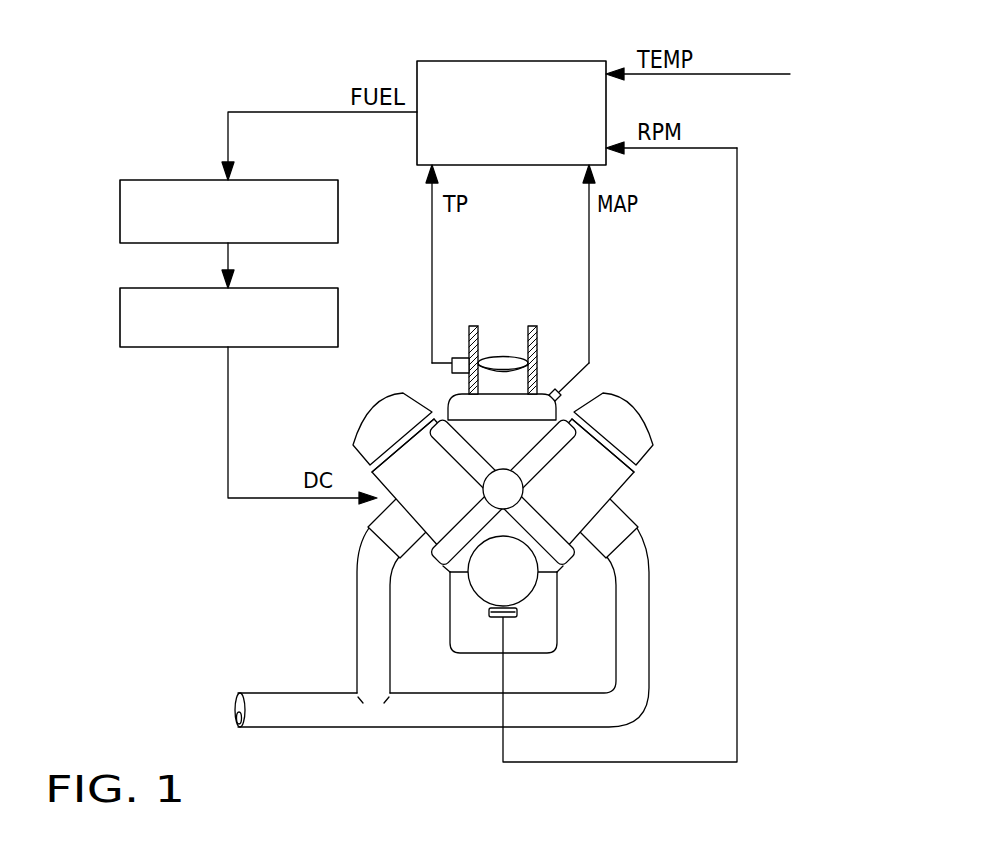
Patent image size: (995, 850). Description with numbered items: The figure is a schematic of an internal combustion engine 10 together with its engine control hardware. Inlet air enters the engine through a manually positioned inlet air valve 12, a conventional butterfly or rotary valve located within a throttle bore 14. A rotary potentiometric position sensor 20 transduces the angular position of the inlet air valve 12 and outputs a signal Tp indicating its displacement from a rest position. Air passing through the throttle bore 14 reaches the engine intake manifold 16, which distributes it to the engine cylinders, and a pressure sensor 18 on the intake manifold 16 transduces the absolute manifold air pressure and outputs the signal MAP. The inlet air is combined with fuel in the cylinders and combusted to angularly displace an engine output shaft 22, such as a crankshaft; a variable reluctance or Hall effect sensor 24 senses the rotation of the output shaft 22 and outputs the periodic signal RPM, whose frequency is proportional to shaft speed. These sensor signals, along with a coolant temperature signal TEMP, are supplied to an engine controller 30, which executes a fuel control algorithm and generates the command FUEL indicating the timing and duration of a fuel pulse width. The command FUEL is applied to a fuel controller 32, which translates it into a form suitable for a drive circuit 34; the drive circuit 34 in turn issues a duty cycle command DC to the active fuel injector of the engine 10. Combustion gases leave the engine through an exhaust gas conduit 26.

The internal combustion engine 10 is at (655, 478).
The inlet air valve 12 is at (498, 360).
The throttle bore 14 is at (535, 327).
The engine intake manifold 16 is at (558, 407).
The pressure sensor 18 is at (556, 389).
The rotary potentiometric position sensor 20 is at (452, 370).
The engine output shaft 22 is at (485, 587).
The variable reluctance or Hall effect sensor 24 is at (492, 618).
The exhaust gas conduit 26 is at (452, 717).
The engine controller 30 is at (528, 70).
The fuel controller 32 is at (132, 195).
The drive circuit 34 is at (125, 307).